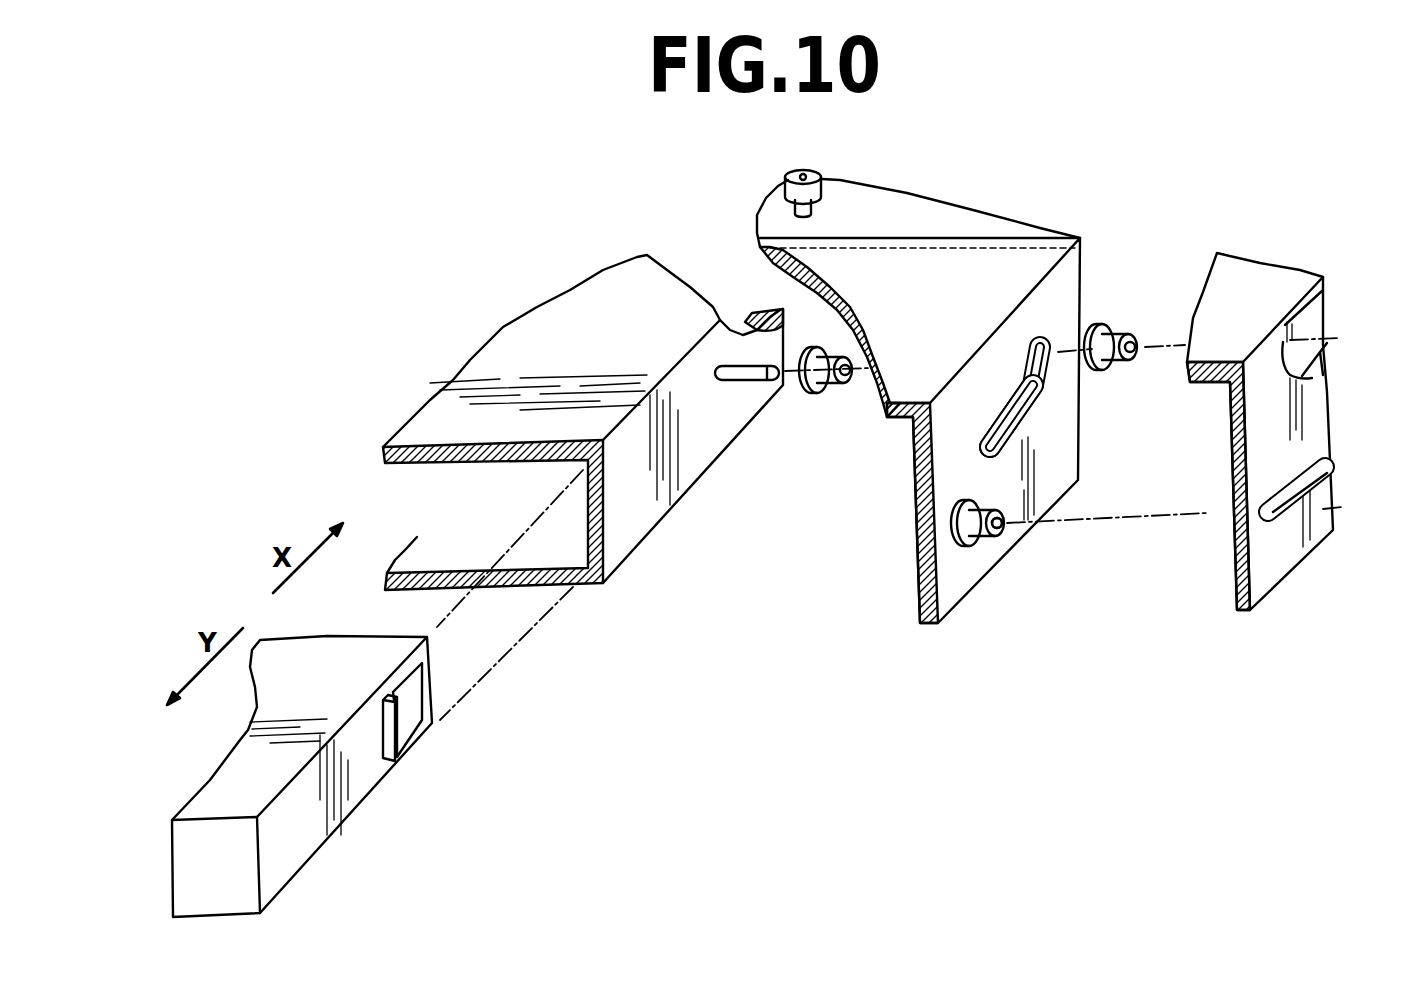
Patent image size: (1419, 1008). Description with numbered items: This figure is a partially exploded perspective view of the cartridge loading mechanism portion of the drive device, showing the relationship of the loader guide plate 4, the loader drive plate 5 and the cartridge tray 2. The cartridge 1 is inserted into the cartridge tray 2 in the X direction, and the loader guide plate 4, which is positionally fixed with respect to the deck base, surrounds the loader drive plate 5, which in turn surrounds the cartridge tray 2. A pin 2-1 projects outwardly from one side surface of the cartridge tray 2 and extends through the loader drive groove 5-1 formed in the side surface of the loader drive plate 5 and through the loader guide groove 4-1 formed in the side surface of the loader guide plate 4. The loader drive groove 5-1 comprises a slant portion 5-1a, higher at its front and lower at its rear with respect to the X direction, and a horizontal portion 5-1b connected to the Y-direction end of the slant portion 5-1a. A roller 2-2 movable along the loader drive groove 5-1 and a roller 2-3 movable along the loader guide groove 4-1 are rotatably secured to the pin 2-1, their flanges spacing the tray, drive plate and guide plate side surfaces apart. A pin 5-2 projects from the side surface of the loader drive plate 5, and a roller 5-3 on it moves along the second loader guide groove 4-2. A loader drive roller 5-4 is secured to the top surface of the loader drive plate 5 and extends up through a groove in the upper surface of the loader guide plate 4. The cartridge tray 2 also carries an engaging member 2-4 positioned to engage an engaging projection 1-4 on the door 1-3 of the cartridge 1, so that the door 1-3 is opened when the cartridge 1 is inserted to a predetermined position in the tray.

The cartridge 1 is at (372, 843).
The door 1-3 is at (413, 717).
The engaging projection 1-4 is at (397, 753).
The cartridge tray 2 is at (662, 496).
The pin 2-1 is at (743, 383).
The roller 2-2 is at (843, 390).
The roller 2-3 is at (1133, 330).
The engaging member 2-4 is at (753, 317).
The loader guide plate 4 is at (1307, 571).
The loader guide groove 4-1 is at (1325, 372).
The loader guide groove 4-2 is at (1325, 492).
The loader drive plate 5 is at (971, 616).
The loader drive groove 5-1 is at (947, 247).
The slant portion 5-1a is at (1028, 372).
The horizontal portion 5-1b is at (998, 418).
The pin 5-2 is at (1013, 527).
The roller 5-3 is at (983, 543).
The loader drive roller 5-4 is at (803, 168).